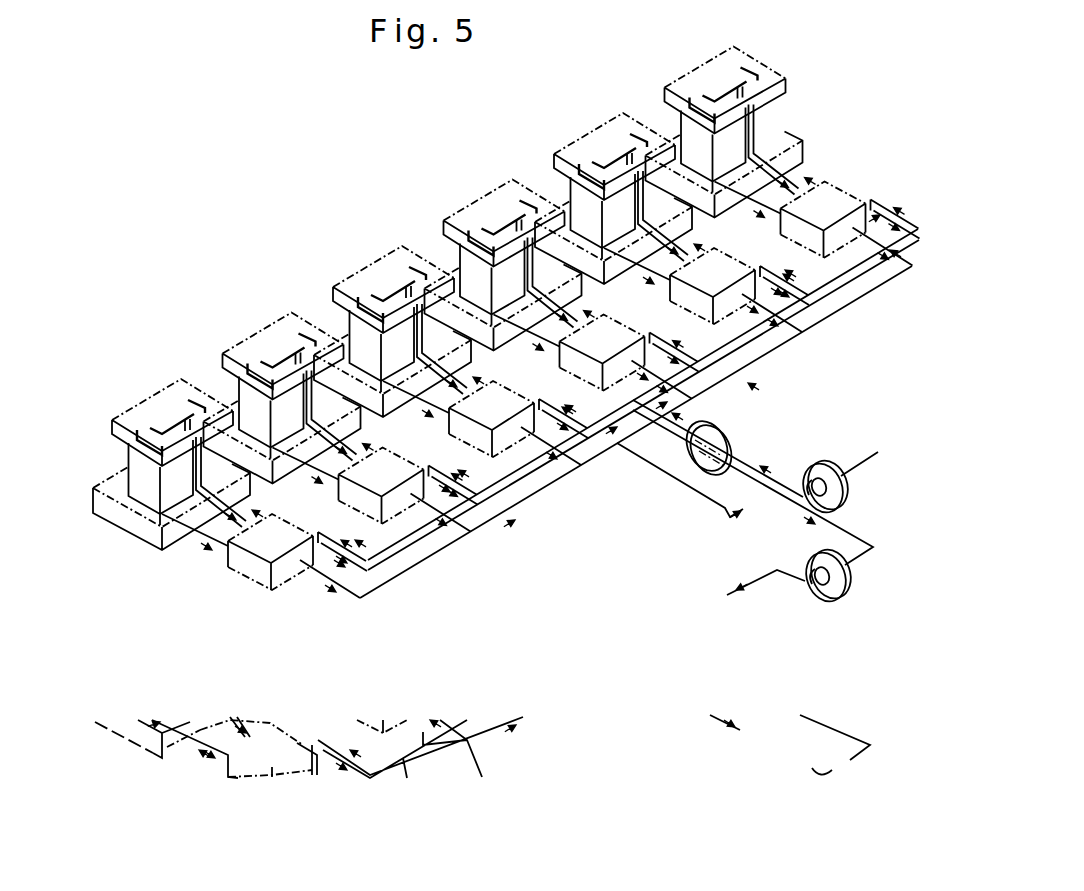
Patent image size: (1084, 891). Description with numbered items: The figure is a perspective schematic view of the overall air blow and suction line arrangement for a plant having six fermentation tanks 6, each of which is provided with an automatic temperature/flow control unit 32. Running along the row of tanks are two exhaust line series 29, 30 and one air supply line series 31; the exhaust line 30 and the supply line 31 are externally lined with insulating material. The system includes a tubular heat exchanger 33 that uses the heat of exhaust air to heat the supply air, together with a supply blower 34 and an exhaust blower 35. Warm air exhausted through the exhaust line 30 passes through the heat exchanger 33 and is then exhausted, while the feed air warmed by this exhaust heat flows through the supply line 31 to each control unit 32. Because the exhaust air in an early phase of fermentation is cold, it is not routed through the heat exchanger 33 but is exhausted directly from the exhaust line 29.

The fermentation tank 6 is at (248, 320).
The exhaust line 29 is at (378, 590).
The exhaust line 30 is at (400, 553).
The air supply line 31 is at (457, 534).
The automatic temperature/flow control unit 32 is at (843, 178).
The tubular heat exchanger 33 is at (729, 438).
The supply blower 34 is at (818, 465).
The exhaust blower 35 is at (826, 603).